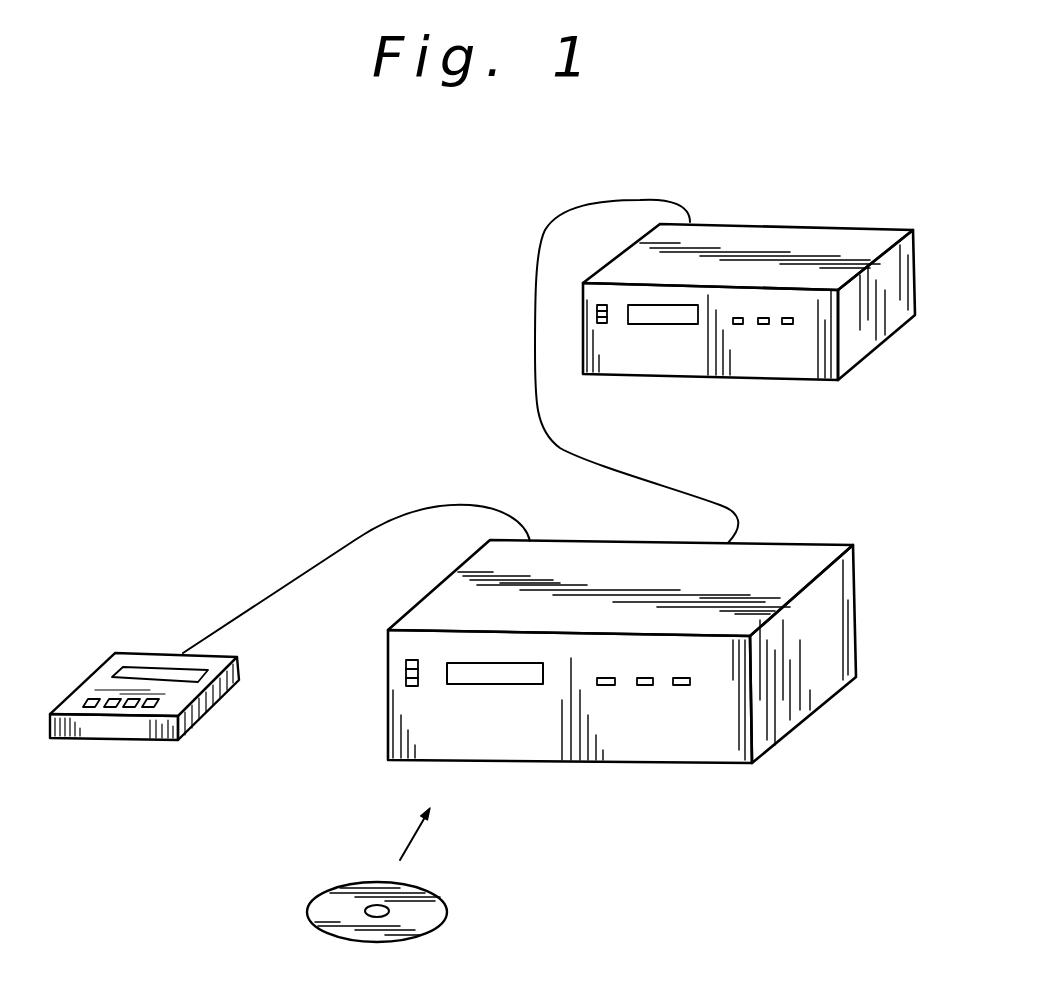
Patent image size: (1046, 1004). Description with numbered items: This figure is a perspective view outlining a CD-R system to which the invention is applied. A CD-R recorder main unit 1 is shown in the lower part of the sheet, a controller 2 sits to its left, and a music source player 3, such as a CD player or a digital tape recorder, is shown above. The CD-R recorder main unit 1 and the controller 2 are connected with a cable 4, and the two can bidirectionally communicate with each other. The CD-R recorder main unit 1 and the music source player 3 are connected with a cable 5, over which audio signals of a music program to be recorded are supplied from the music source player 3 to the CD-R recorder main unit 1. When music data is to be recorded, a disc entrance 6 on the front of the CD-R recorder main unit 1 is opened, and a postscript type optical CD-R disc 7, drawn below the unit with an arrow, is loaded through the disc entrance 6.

The CD-R recorder main unit 1 is at (826, 650).
The controller 2 is at (228, 680).
The music source player 3 is at (853, 342).
The cable 4 is at (353, 540).
The cable 5 is at (613, 464).
The disc entrance 6 is at (515, 677).
The postscript type optical CD-R disc 7 is at (433, 912).